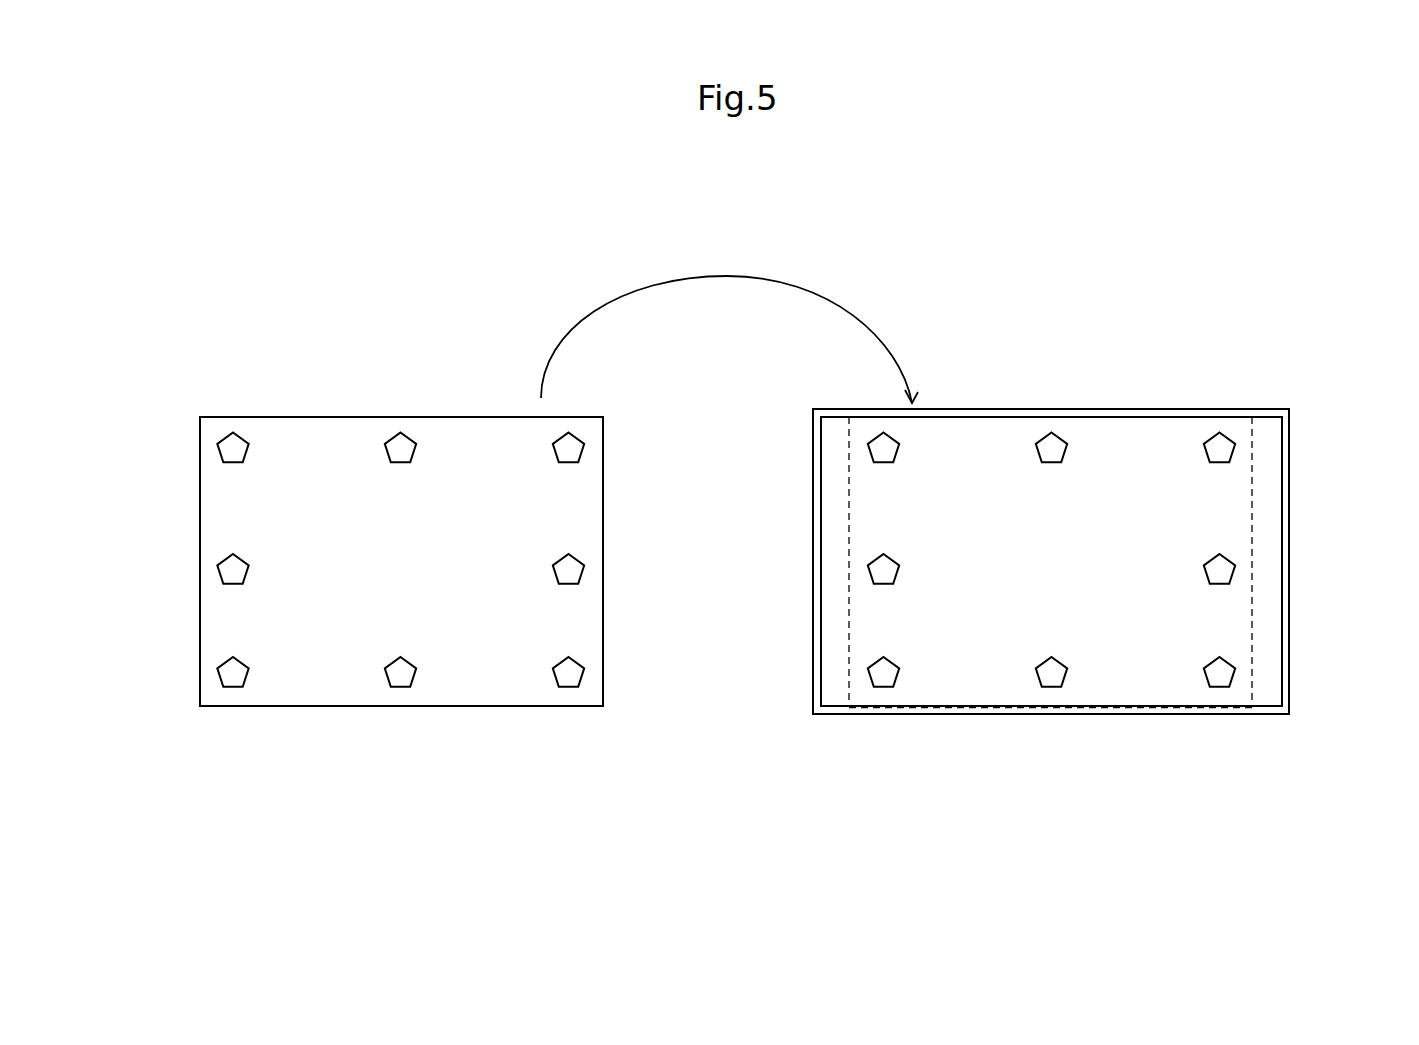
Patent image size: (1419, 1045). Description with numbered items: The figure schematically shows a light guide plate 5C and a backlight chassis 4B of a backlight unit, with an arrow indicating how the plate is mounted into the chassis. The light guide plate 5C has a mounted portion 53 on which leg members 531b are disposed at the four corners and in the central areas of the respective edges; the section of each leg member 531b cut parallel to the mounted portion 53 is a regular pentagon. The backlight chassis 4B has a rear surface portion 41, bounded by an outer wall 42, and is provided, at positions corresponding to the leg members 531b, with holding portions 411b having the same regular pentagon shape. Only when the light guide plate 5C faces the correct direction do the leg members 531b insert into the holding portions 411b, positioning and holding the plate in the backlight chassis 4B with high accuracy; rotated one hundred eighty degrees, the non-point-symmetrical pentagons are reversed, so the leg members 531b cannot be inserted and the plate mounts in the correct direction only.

The optical element / lens sheet 5C is at (184, 392).
The mounted portion 53 is at (479, 668).
The leg member 531b is at (222, 444).
The backlight chassis 4B is at (1305, 386).
The rear surface portion 41 is at (1110, 668).
The outer wall of holder 42 is at (1287, 687).
The holding portion 411b is at (873, 447).